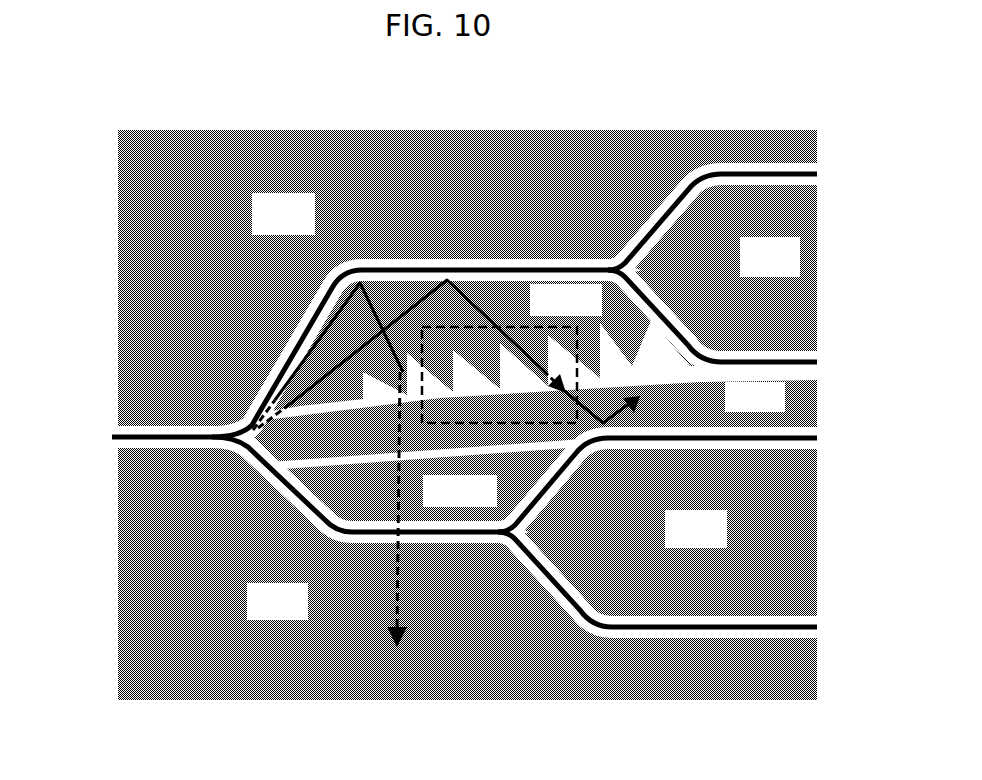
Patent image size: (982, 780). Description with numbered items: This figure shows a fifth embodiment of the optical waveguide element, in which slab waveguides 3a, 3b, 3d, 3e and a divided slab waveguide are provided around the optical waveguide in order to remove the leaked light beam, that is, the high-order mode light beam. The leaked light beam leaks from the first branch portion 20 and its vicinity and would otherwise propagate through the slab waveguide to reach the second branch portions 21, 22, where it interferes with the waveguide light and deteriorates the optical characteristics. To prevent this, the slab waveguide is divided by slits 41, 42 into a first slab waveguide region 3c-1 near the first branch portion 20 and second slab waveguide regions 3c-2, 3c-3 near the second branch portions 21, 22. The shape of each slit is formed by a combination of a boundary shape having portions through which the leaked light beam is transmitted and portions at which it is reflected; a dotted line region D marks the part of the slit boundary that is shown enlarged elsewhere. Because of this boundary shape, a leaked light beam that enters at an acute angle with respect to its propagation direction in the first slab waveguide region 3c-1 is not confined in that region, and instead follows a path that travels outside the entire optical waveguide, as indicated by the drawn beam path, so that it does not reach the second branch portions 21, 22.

The first branch portion 20 is at (207, 437).
The second branch portion 21 is at (607, 265).
The second branch portion 22 is at (495, 535).
The slit 41 is at (300, 410).
The slit 42 is at (350, 463).
The slab waveguide 3a is at (358, 195).
The slab waveguide 3b is at (298, 575).
The first slab waveguide region 3c-1 is at (548, 406).
The second slab waveguide region 3c-2 is at (465, 327).
The second slab waveguide region 3c-3 is at (420, 487).
The slab waveguide 3d is at (728, 270).
The slab waveguide 3e is at (708, 562).
The dotted line region D is at (499, 361).